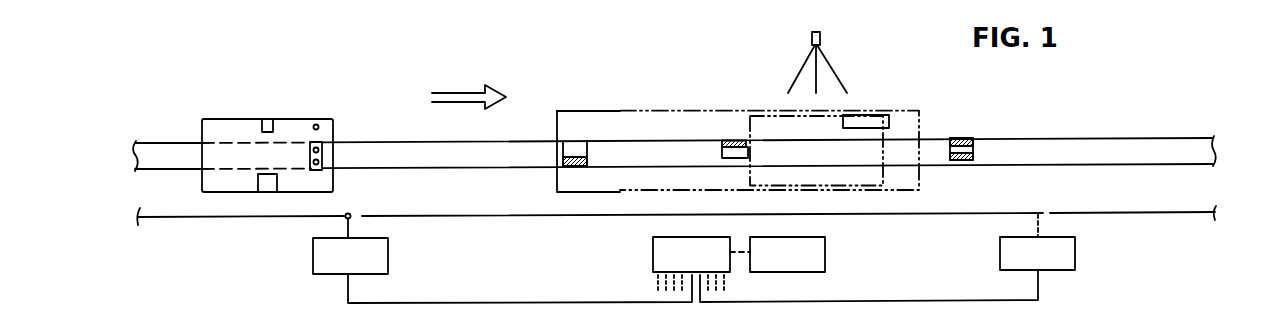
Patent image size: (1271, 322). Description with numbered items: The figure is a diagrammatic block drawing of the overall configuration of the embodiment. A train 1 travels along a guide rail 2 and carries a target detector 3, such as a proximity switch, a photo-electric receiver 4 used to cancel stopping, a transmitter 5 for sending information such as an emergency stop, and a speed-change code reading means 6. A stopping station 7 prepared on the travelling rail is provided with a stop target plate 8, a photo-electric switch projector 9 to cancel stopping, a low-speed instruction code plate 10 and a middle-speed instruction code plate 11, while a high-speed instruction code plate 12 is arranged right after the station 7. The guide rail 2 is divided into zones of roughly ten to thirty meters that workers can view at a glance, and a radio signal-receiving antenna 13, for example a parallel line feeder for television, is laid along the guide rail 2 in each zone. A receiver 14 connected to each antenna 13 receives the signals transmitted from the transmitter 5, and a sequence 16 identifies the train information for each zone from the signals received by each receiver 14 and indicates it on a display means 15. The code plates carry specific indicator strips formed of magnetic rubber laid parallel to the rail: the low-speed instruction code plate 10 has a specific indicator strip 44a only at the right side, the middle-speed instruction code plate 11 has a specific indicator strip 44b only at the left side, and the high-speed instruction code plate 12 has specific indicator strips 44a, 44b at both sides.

The train 1 is at (226, 118).
The guide rail 2 is at (403, 152).
The target detector 3 is at (317, 124).
The photo-electric receiver 4 is at (268, 118).
The transmitter 5 is at (264, 193).
The speed-change code reading means 6 is at (322, 150).
The stopping station 7 is at (620, 108).
The stop target plate 8 is at (872, 117).
The photo-electric switch projector 9 is at (823, 41).
The low-speed instruction code plate 10 is at (732, 134).
The middle-speed instruction code plate 11 is at (569, 138).
The high-speed instruction code plate 12 is at (973, 135).
The radio signal-receiving antenna 13 is at (193, 219).
The receiver 14 is at (379, 258).
The display means 15 is at (777, 254).
The sequence 16 is at (691, 263).
The specific indicator strip 44a is at (708, 138).
The specific indicator strip 44b is at (958, 163).